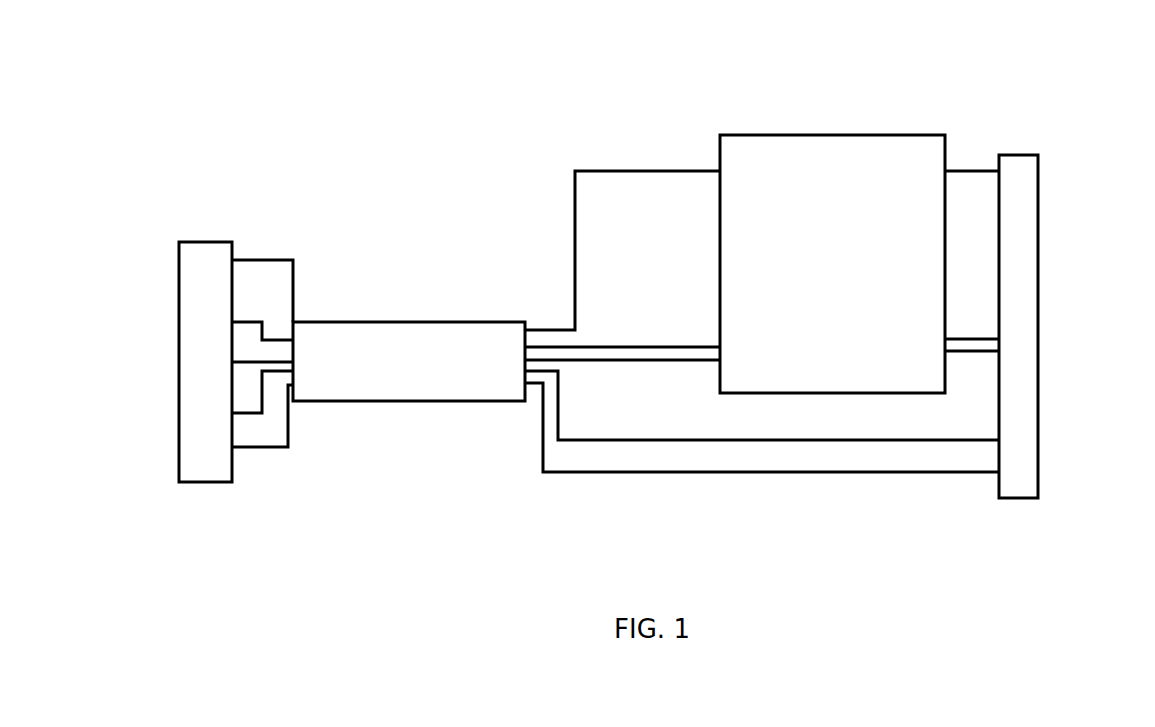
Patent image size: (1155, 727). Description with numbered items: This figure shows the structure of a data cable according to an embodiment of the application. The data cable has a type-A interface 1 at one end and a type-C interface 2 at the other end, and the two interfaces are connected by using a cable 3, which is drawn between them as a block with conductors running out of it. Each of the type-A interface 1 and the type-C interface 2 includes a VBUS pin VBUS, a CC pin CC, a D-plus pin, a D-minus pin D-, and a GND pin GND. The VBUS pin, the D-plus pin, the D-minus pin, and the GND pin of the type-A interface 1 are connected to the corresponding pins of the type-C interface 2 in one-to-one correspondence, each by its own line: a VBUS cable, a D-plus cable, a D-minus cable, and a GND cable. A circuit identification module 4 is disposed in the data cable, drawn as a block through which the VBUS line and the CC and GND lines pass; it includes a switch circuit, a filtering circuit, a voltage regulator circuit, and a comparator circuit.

The type-A interface 1 is at (202, 242).
The type-C interface 2 is at (1020, 155).
The cable 3 is at (417, 323).
The circuit identification module 4 is at (813, 133).
The VBUS pin VBUS is at (643, 170).
The CC pin CC is at (637, 348).
The GND pin GND is at (673, 360).
The D− pin D- is at (578, 443).